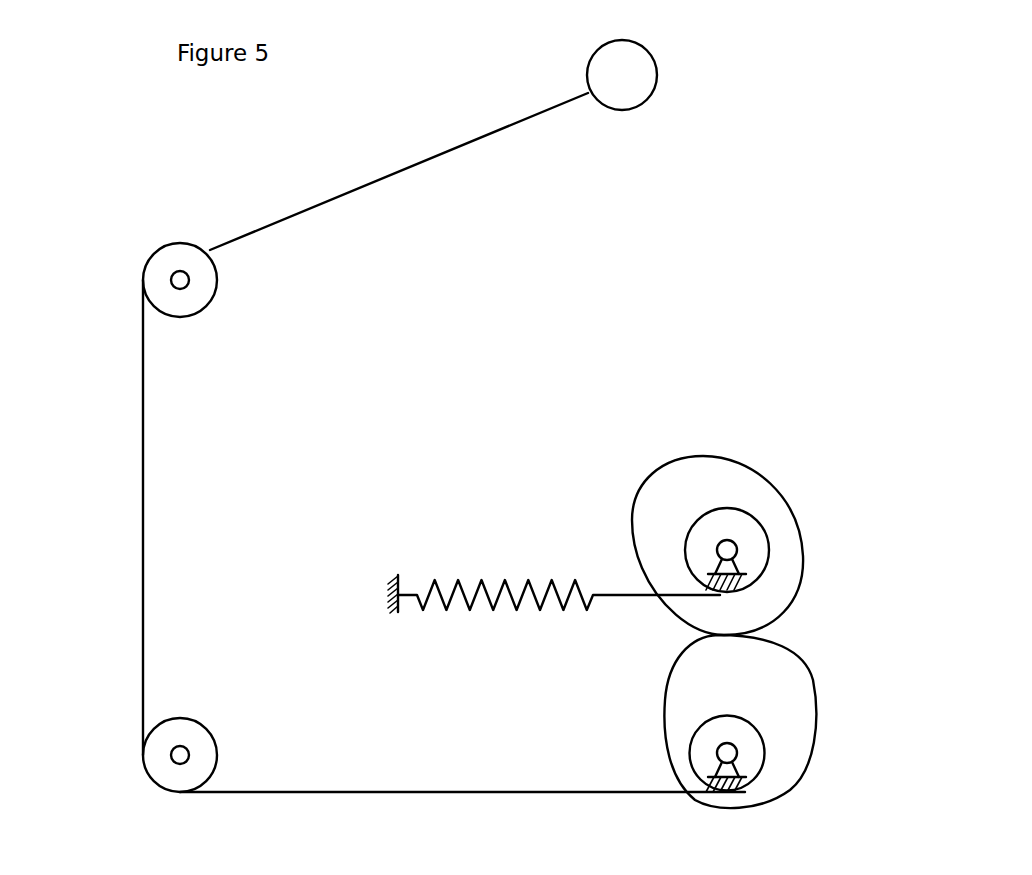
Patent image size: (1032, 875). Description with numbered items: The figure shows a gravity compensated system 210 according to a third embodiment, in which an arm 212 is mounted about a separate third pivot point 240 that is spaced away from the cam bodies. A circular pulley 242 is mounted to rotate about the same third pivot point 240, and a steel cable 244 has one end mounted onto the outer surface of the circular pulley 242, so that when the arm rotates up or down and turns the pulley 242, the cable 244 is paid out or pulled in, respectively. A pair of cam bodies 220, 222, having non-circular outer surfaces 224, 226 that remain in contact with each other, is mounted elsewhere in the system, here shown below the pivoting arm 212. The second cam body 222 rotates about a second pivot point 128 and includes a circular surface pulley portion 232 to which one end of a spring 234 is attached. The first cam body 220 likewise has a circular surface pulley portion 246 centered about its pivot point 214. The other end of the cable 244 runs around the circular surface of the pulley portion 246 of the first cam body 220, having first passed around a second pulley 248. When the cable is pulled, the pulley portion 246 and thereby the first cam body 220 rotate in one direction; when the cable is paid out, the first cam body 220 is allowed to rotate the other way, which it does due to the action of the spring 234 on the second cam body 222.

The second pivot point 128 is at (738, 546).
The gravity compensated system 210 is at (760, 284).
The arm 212 is at (409, 168).
The pivot point 214 is at (722, 755).
The first cam body 220 is at (683, 695).
The second cam body 222 is at (658, 477).
The non-circular outer surface 224 is at (713, 808).
The non-circular outer surface 226 is at (691, 518).
The circular surface pulley portion 232 is at (690, 522).
The spring 234 is at (492, 603).
The third pivot point 240 is at (172, 280).
The circular pulley 242 is at (137, 240).
The steel cable 244 is at (135, 506).
The circular surface pulley portion 246 is at (717, 743).
The second pulley 248 is at (132, 763).